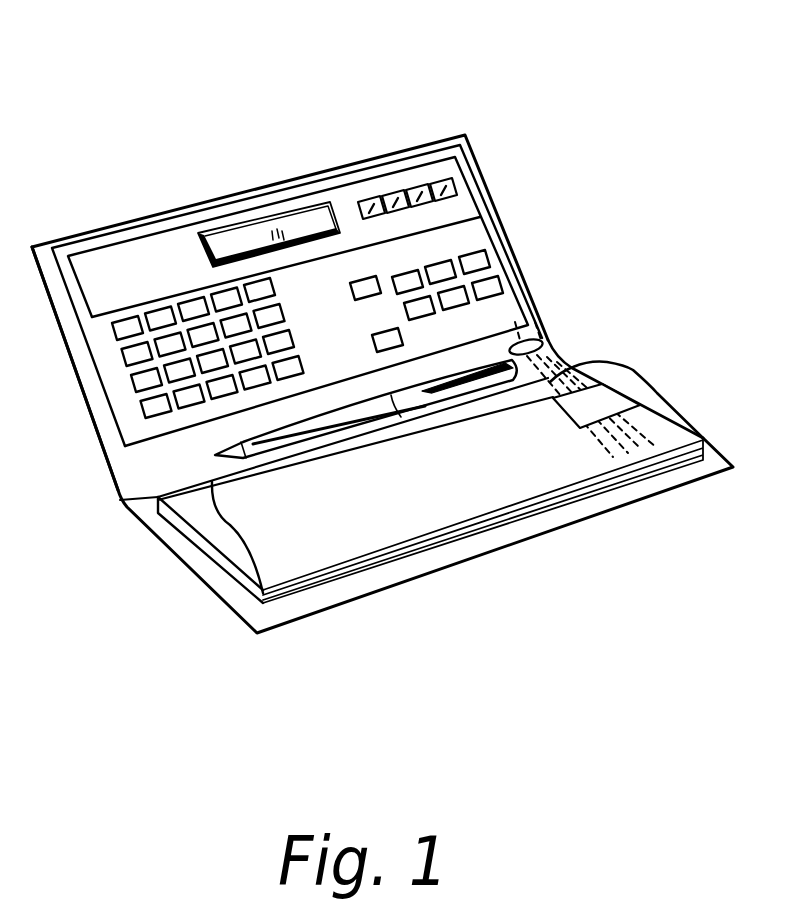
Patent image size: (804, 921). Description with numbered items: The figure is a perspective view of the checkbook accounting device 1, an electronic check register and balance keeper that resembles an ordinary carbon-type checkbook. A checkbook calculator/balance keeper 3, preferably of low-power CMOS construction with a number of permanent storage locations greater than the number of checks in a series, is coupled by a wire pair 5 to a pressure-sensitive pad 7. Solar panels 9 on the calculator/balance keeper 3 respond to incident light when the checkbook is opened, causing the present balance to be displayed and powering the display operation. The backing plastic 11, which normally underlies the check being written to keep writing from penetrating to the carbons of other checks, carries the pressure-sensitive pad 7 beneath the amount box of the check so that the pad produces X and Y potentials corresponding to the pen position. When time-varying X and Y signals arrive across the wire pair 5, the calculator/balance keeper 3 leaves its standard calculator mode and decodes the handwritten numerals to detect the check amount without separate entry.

The checkbook accounting device 1 is at (528, 58).
The checkbook calculator/balance keeper 3 is at (482, 232).
The wire pair 5 is at (540, 342).
The pressure-sensitive pad 7 is at (617, 387).
The solar panels 9 is at (410, 192).
The backing plastic 11 is at (247, 535).